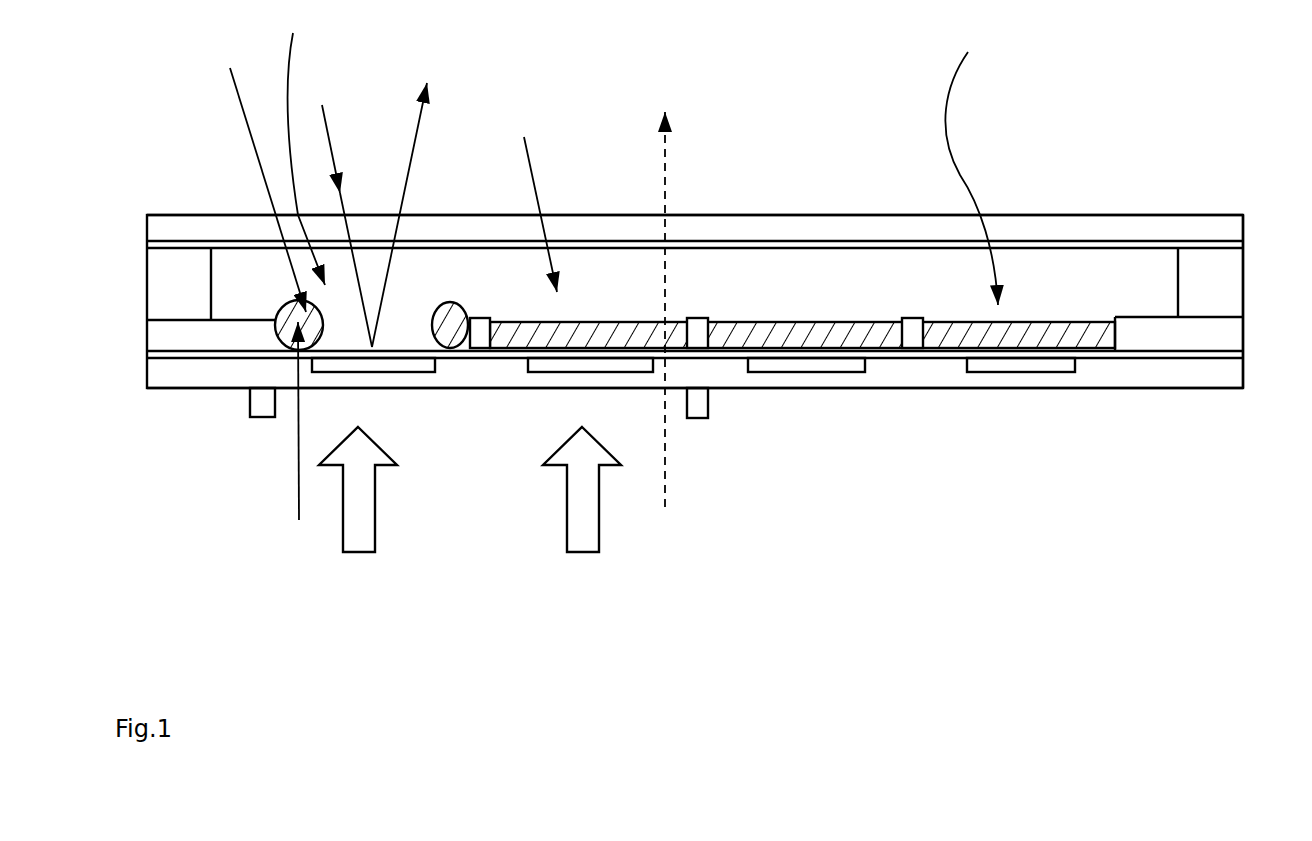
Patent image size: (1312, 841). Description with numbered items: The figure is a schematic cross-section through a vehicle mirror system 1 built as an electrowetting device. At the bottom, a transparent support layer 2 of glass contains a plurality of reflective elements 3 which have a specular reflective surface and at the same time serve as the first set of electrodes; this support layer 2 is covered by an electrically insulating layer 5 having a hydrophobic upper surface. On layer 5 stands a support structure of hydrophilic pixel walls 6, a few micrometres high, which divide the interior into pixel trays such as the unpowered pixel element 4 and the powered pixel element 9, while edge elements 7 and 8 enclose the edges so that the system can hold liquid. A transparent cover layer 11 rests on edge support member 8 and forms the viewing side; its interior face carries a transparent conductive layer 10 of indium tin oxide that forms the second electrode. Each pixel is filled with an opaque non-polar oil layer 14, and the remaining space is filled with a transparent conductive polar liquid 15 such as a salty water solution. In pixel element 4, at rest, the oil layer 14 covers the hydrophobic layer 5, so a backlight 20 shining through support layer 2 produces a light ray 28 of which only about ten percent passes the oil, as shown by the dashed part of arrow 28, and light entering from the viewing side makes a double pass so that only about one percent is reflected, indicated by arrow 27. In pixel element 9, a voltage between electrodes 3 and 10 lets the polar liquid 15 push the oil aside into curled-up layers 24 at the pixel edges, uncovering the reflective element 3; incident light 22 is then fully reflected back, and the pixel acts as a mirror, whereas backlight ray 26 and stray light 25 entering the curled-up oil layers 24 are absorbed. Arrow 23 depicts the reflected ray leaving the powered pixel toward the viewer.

The vehicle mirror system 1 is at (827, 612).
The support layer 2 is at (1222, 377).
The reflective elements 3 is at (387, 372).
The pixel element 4 is at (971, 166).
The electrically insulating layer 5 is at (1243, 355).
The hydrophilic pixel walls 6 is at (700, 317).
The edge element 7 is at (1228, 338).
The edge support member 8 is at (162, 267).
The pixel element 9 is at (306, 147).
The transparent conductive layer 10 is at (1177, 243).
The cover layer 11 is at (1125, 225).
The oil layer 14 is at (283, 312).
The transparent conductive polar liquid 15 is at (1065, 268).
The backlight 20 is at (362, 535).
The light ray 22 is at (325, 120).
The reflected light ray 23 is at (415, 143).
The curled-up layers 24 is at (295, 301).
The light ray 25 is at (236, 88).
The light ray 26 is at (298, 483).
The light ray 27 is at (534, 183).
The light ray 28 is at (668, 478).